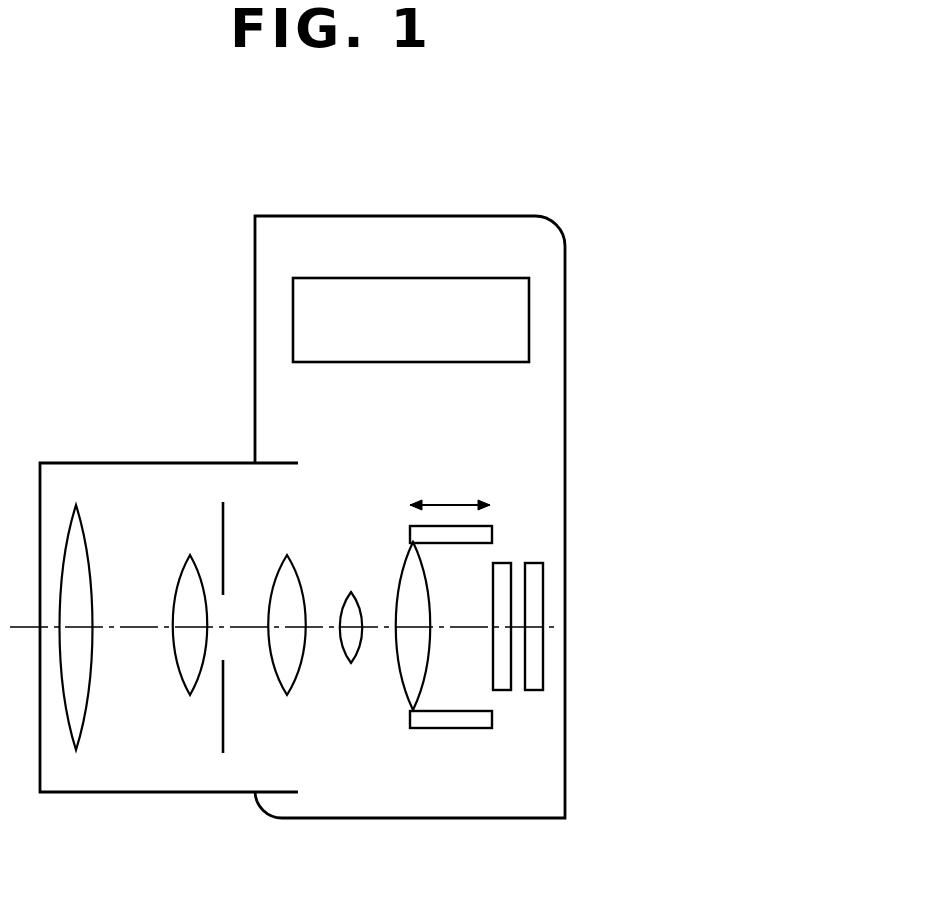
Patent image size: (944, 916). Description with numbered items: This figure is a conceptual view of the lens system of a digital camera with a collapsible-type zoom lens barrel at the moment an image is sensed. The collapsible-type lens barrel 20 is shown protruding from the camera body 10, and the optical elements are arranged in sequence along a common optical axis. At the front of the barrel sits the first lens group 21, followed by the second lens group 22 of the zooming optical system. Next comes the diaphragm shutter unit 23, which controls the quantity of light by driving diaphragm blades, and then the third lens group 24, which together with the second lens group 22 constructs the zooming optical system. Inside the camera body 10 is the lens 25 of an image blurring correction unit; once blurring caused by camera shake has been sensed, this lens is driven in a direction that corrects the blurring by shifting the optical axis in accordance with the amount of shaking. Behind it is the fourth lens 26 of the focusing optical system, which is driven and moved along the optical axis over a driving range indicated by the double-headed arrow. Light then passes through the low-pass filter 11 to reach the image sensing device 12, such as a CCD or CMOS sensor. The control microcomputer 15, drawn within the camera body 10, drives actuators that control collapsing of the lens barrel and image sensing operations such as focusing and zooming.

The camera body 10 is at (402, 216).
The low-pass filter 11 is at (505, 594).
The image sensing device 12 is at (535, 660).
The control microcomputer 15 is at (529, 318).
The collapsible-type lens barrel 20 is at (150, 463).
The first lens group 21 is at (80, 505).
The second lens group 22 is at (190, 695).
The diaphragm shutter unit 23 is at (223, 502).
The third lens group 24 is at (287, 695).
The lens of image blurring correction unit 25 is at (349, 660).
The fourth lens 26 is at (408, 690).